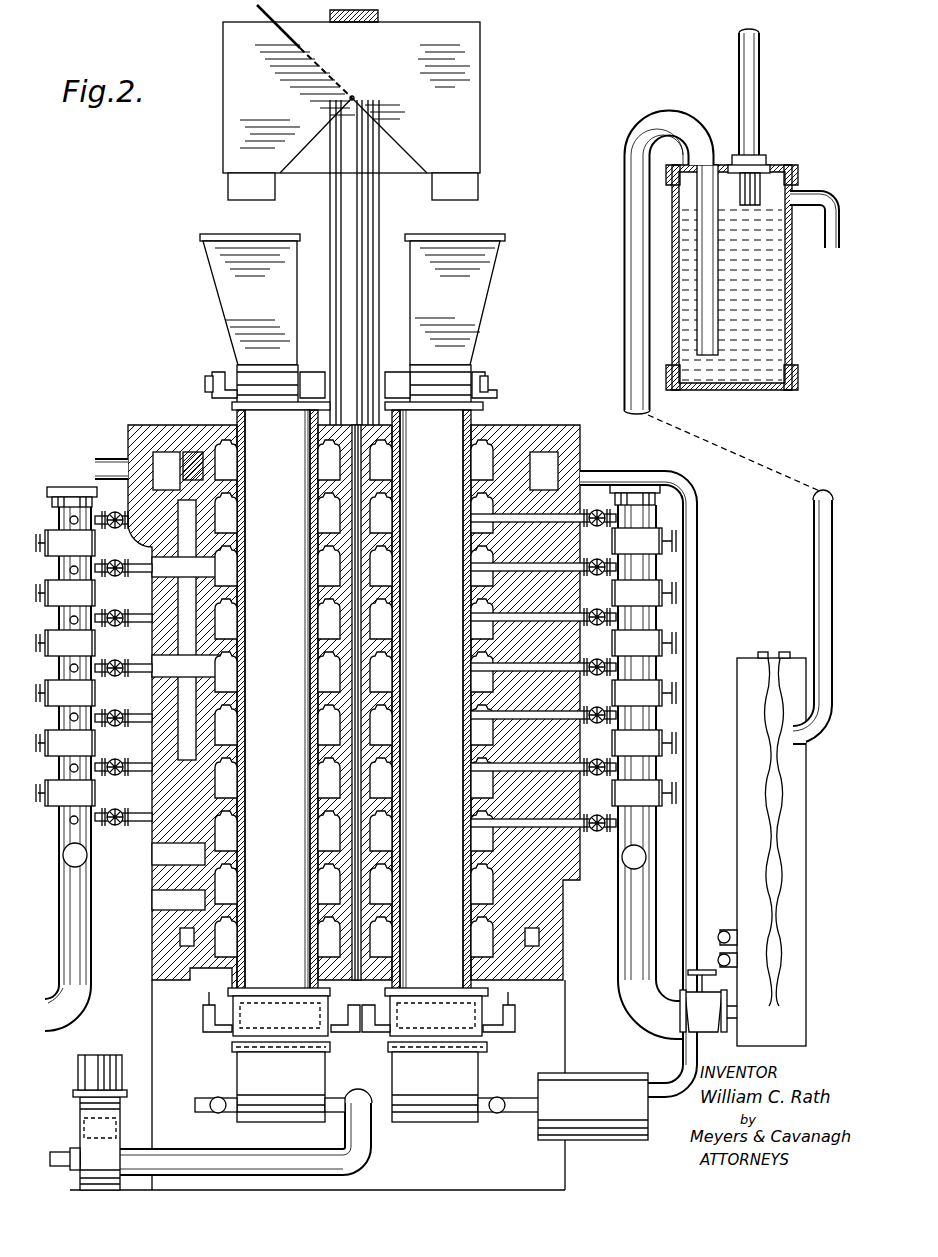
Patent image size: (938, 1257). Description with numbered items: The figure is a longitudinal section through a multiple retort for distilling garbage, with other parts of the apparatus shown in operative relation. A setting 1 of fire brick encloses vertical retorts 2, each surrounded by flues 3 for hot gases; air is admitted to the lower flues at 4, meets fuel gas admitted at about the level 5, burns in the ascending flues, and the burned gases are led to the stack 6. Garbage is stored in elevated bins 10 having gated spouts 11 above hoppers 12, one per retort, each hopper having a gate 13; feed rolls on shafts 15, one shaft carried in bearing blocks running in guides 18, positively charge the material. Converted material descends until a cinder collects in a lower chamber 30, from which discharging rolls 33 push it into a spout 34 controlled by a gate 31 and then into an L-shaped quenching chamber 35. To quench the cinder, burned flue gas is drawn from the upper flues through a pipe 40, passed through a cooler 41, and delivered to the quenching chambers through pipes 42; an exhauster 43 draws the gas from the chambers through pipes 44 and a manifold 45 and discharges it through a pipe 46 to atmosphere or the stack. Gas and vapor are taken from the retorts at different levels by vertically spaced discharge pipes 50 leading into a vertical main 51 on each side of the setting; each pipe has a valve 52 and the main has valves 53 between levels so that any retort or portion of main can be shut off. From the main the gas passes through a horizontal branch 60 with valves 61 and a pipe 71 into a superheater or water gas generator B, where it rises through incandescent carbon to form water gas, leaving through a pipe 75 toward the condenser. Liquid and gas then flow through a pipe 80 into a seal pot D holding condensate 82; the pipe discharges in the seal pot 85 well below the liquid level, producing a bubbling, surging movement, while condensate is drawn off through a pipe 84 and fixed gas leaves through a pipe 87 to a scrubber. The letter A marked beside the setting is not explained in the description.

The setting 1 is at (140, 440).
The retort 2 is at (354, 700).
The flues 3 is at (480, 695).
The air admission point 4 is at (185, 898).
The gas admission level 5 is at (480, 808).
The stack 6 is at (380, 220).
The elevated bins 10 is at (478, 48).
The spouts 11 is at (478, 187).
The hoppers 12 is at (352, 319).
The gate 13 is at (480, 410).
The roll shafts 15 is at (207, 382).
The guides 18 is at (318, 375).
The lower chamber 30 is at (358, 975).
The gate 31 is at (447, 1052).
The discharging rolls 33 is at (406, 1050).
The discharge spout 34 is at (430, 1040).
The quenching chamber 35 is at (436, 1112).
The pipe 40 is at (700, 625).
The cooler 41 is at (605, 1125).
The pipes 42 is at (492, 1115).
The exhauster 43 is at (84, 1120).
The pipes 44 is at (365, 1095).
The manifold 45 is at (372, 1165).
The pipe 46 is at (80, 1075).
The discharge pipes 50 is at (602, 660).
The vertical main 51 is at (628, 903).
The valve 52 is at (590, 718).
The manifold valves 53 is at (670, 620).
The horizontal branch 60 is at (622, 856).
The valves 61 is at (672, 1028).
The pipe 71 is at (716, 1034).
The pipe 75 is at (812, 600).
The pipe 80 is at (623, 250).
The liquid 82 is at (765, 290).
The pipe 84 is at (805, 195).
The seal pot 85 is at (715, 355).
The pipe 87 is at (760, 60).
The apparatus A is at (150, 410).
The superheater B is at (796, 900).
The seal pot D is at (800, 297).